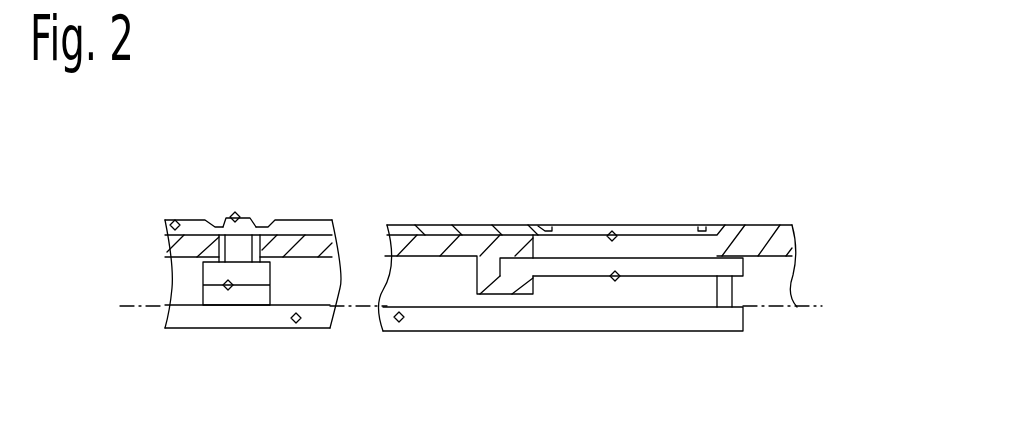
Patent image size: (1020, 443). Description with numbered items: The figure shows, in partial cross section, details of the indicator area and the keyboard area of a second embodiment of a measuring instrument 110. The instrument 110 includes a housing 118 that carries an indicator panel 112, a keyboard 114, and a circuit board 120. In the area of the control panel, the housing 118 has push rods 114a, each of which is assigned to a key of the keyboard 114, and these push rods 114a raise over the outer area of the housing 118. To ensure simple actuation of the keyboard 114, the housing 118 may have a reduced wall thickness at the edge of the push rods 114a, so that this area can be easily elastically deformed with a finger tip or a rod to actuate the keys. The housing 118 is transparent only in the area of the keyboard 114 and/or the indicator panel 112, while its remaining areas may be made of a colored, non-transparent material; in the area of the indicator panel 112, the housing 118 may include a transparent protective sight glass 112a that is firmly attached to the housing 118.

The instrument 110 is at (377, 60).
The indicator panel 112 is at (618, 279).
The transparent protective sight glass 112a is at (615, 233).
The keyboard 114 is at (224, 289).
The push rods 114a is at (232, 213).
The housing 118 is at (171, 221).
The circuit board 120 is at (402, 321).